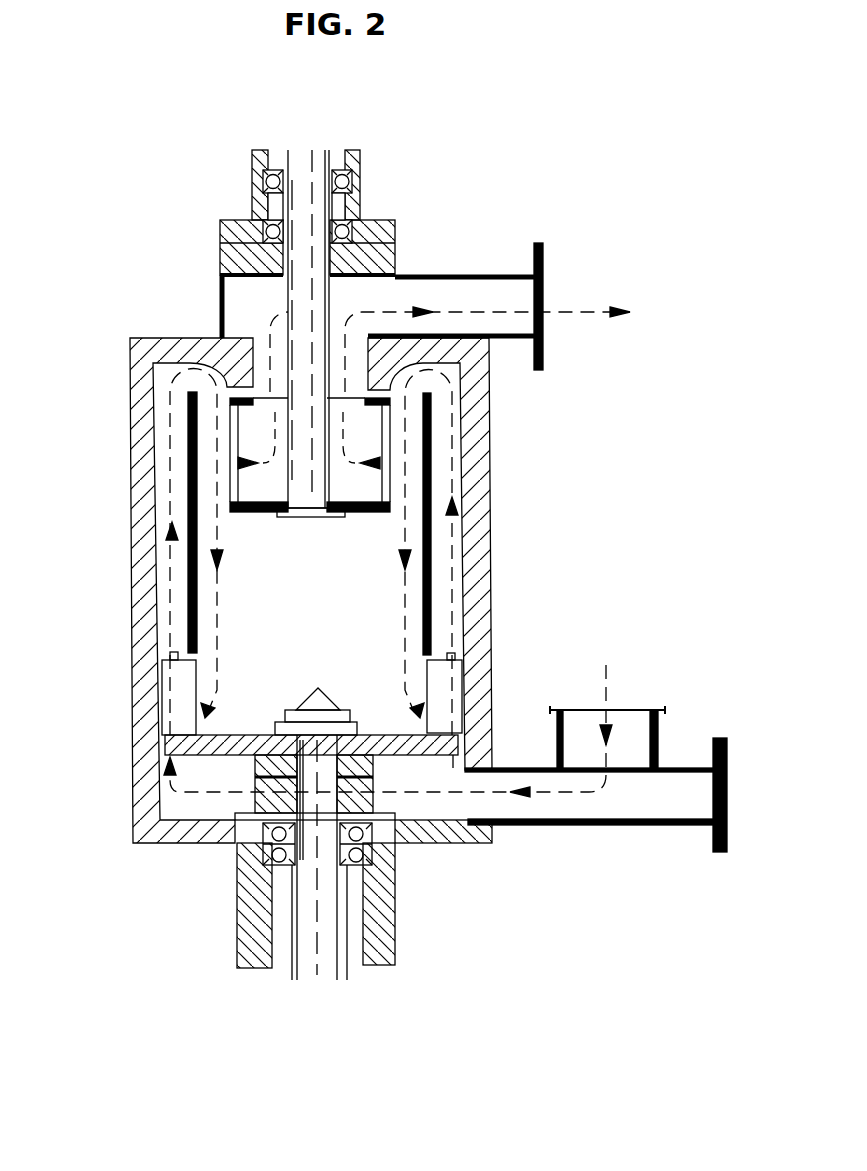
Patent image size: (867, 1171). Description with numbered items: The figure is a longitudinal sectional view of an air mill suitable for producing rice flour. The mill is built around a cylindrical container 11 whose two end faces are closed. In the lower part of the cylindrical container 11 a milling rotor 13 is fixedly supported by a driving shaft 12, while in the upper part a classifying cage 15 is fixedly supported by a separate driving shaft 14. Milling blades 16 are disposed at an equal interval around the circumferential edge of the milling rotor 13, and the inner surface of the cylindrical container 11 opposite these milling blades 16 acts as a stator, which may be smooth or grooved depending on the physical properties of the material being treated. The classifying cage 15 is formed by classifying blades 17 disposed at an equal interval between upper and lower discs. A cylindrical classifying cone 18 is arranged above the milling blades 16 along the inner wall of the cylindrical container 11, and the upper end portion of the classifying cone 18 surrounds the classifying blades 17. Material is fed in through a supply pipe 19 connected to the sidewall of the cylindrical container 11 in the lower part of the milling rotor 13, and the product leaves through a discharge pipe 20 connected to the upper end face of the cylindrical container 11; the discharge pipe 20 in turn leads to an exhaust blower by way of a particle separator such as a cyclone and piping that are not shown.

The cylindrical container 11 is at (470, 472).
The driving shaft 12 is at (322, 893).
The milling rotor 13 is at (235, 745).
The driving shaft 14 is at (307, 283).
The classifying cage 15 is at (258, 423).
The milling blades 16 is at (175, 690).
The classifying blades 17 is at (245, 458).
The classifying cone 18 is at (188, 560).
The supply pipe 19 is at (563, 803).
The discharge pipe 20 is at (433, 297).